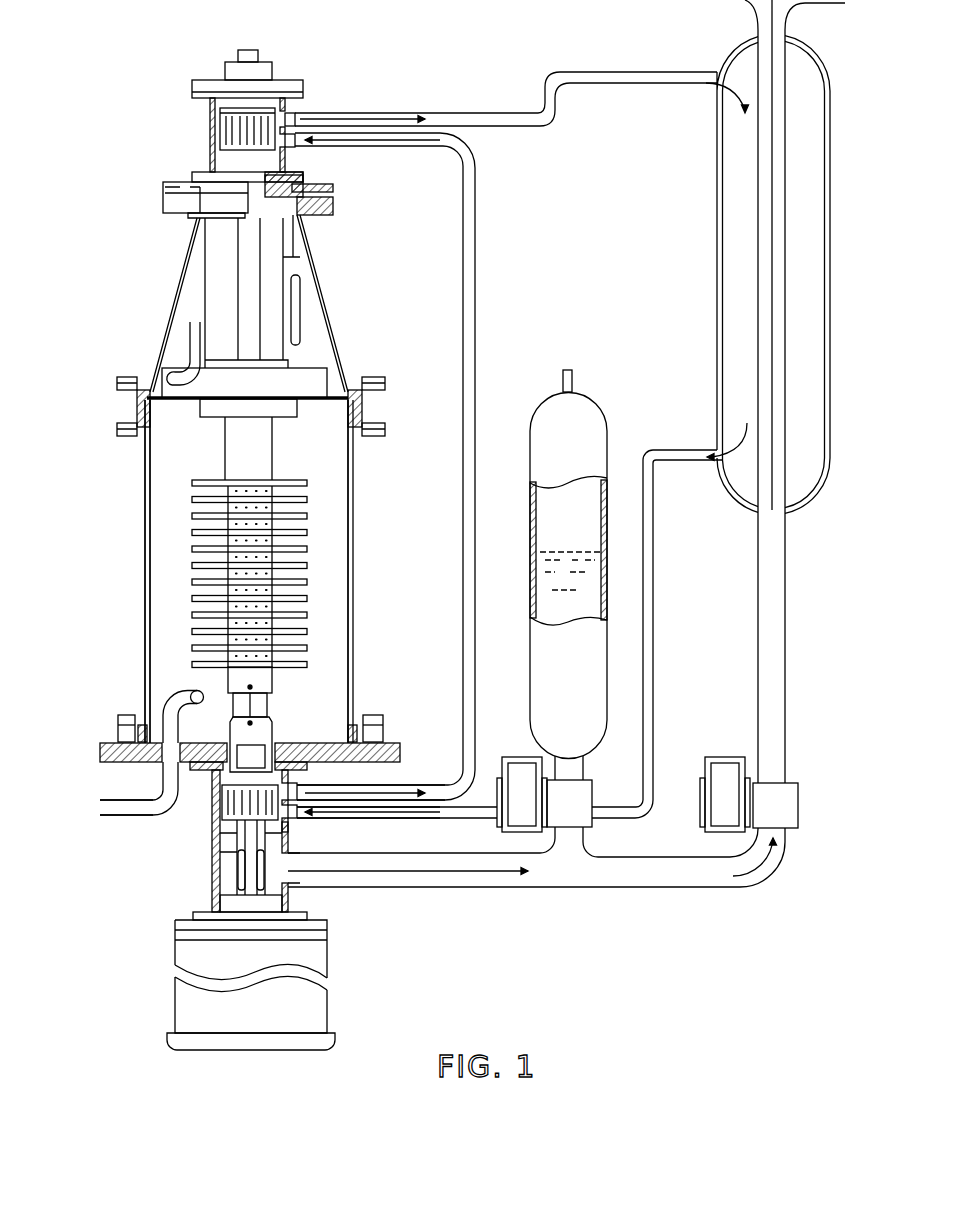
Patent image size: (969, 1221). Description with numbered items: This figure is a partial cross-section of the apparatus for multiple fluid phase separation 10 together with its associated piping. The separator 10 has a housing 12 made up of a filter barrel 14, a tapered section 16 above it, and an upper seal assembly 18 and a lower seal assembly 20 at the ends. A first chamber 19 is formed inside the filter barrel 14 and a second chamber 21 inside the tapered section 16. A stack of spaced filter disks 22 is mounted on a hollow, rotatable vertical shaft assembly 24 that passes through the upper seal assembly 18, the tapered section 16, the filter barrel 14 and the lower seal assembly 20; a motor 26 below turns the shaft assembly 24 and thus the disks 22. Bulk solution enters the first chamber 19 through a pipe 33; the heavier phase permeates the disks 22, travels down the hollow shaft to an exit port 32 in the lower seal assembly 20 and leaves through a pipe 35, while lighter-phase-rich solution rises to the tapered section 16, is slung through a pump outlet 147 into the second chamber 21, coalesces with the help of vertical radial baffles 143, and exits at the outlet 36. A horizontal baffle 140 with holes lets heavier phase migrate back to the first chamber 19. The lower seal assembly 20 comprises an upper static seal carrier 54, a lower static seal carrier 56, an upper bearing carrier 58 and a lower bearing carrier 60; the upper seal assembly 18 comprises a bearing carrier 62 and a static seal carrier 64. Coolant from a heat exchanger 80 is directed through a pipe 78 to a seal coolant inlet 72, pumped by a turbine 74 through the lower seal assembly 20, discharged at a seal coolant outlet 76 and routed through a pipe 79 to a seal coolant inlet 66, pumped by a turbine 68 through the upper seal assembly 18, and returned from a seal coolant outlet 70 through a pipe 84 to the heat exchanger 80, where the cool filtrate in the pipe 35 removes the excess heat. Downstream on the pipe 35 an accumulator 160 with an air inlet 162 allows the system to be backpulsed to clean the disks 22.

The apparatus for multiple fluid phase separation 10 is at (140, 598).
The housing 12 is at (147, 641).
The filter barrel 14 is at (147, 556).
The tapered section 16 is at (172, 296).
The upper seal assembly 18 is at (296, 80).
The first chamber 19 is at (335, 549).
The lower seal assembly 20 is at (218, 826).
The second chamber 21 is at (335, 372).
The filter disks 22 is at (308, 517).
The shaft assembly 24 is at (272, 608).
The motor 26 is at (328, 966).
The exit port 32 is at (237, 871).
The pipe 33 is at (115, 818).
The pipe 35 is at (787, 641).
The outlet 36 is at (163, 189).
The upper static seal carrier 54 is at (165, 713).
The lower static seal carrier 56 is at (289, 831).
The upper bearing carrier 58 is at (237, 843).
The lower bearing carrier 60 is at (223, 899).
The bearing carrier 62 is at (212, 100).
The static seal carrier 64 is at (222, 163).
The seal coolant inlet 66 is at (296, 147).
The turbine 68 is at (220, 125).
The seal coolant outlet 70 is at (296, 110).
The seal coolant inlet 72 is at (298, 819).
The turbine 74 is at (225, 808).
The seal coolant outlet 76 is at (298, 785).
The pipe 78 is at (655, 648).
The pipe 79 is at (477, 300).
The heat exchanger 80 is at (716, 222).
The pipe 84 is at (560, 73).
The horizontal baffle 140 is at (192, 400).
The baffles 143 is at (308, 306).
The pump outlet 147 is at (195, 351).
The accumulator 160 is at (606, 441).
The air inlet 162 is at (571, 370).